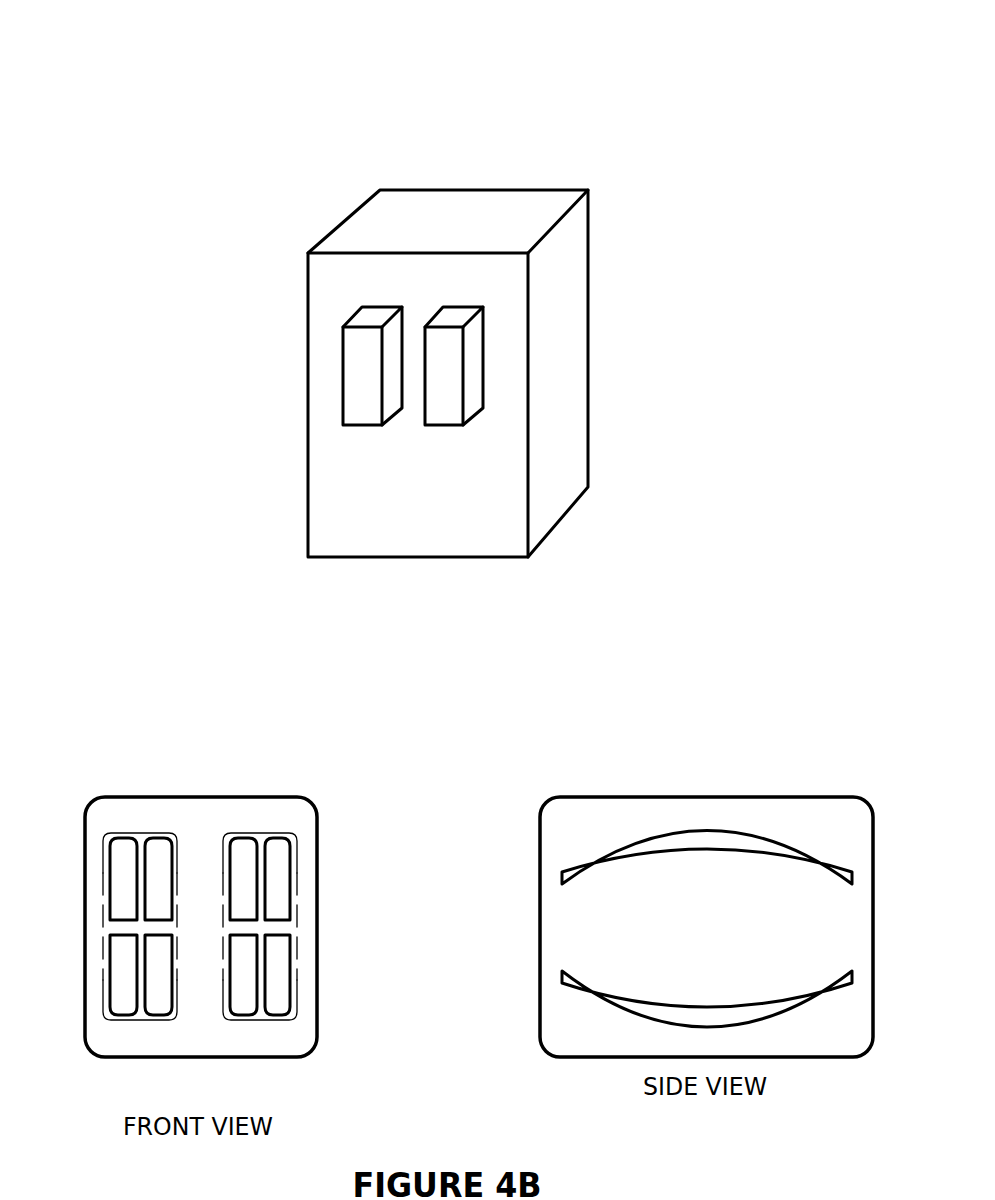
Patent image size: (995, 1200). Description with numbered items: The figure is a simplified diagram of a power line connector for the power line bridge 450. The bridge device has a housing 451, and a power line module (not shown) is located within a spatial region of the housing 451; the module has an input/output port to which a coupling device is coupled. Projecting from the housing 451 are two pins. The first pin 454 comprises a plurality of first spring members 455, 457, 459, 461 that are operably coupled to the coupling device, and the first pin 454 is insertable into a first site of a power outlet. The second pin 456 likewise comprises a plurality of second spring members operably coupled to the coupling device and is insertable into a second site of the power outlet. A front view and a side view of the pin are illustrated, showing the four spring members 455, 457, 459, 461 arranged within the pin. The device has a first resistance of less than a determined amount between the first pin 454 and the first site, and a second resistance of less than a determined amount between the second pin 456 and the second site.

The power line bridge 450 is at (505, 294).
The housing 451 is at (552, 487).
The first pin 454 is at (450, 378).
The second pin 456 is at (116, 812).
The first spring member 455 is at (280, 867).
The first spring member 457 is at (243, 868).
The first spring member 459 is at (278, 995).
The first spring member 461 is at (240, 1003).